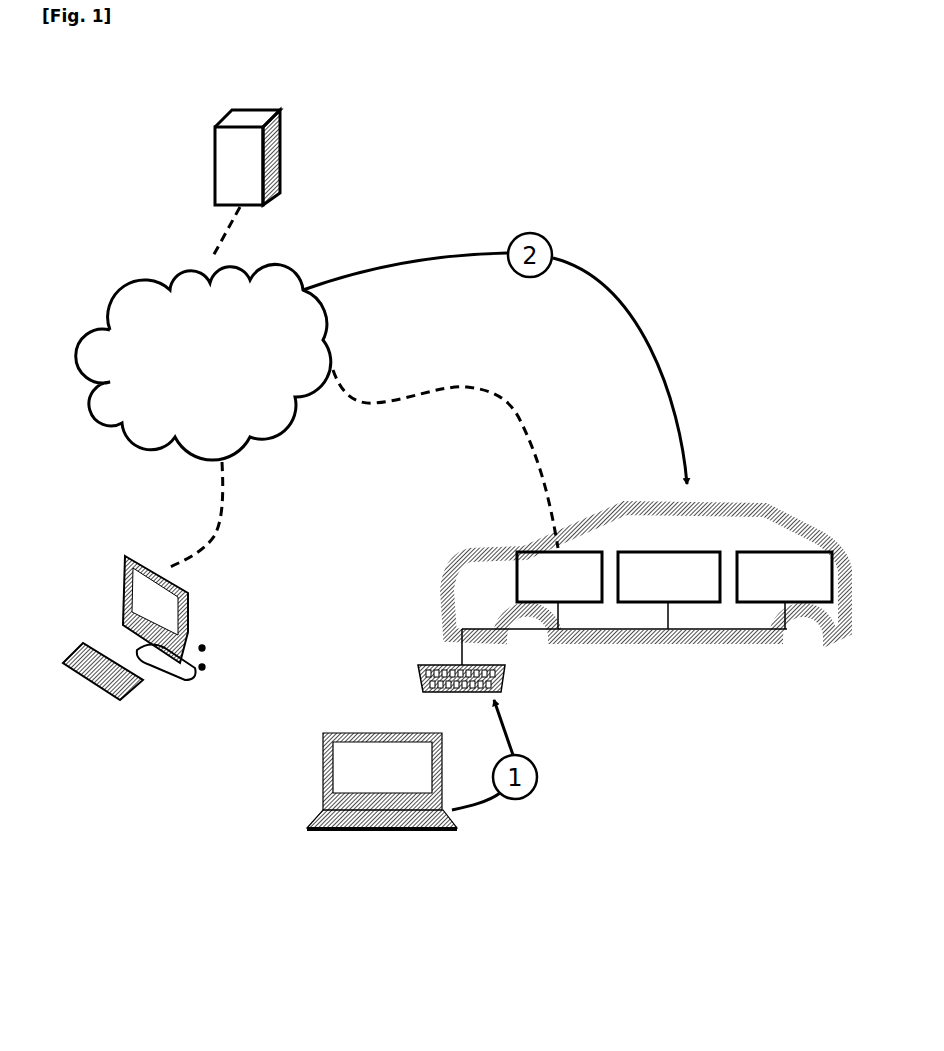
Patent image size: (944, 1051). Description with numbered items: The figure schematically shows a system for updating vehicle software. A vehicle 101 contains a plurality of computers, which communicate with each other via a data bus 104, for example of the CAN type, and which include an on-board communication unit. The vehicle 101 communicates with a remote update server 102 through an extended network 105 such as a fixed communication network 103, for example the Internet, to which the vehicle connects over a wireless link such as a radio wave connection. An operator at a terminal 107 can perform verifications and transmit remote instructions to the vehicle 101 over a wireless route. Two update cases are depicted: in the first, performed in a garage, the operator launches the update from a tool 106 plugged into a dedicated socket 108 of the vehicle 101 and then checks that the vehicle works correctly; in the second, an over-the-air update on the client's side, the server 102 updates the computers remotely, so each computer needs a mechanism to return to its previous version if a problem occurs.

The vehicle 101 is at (763, 513).
The remote update server 102 is at (216, 130).
The fixed communication network 103 is at (194, 265).
The data bus 104 is at (703, 629).
The extended network 105 is at (115, 315).
The tool 106 is at (458, 830).
The terminal 107 is at (127, 697).
The dedicated socket 108 is at (418, 668).